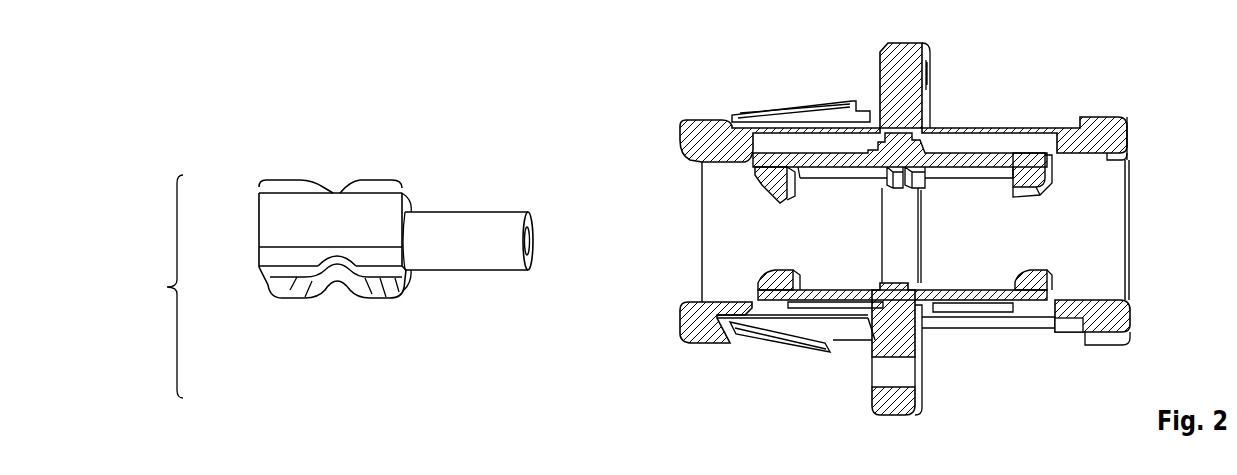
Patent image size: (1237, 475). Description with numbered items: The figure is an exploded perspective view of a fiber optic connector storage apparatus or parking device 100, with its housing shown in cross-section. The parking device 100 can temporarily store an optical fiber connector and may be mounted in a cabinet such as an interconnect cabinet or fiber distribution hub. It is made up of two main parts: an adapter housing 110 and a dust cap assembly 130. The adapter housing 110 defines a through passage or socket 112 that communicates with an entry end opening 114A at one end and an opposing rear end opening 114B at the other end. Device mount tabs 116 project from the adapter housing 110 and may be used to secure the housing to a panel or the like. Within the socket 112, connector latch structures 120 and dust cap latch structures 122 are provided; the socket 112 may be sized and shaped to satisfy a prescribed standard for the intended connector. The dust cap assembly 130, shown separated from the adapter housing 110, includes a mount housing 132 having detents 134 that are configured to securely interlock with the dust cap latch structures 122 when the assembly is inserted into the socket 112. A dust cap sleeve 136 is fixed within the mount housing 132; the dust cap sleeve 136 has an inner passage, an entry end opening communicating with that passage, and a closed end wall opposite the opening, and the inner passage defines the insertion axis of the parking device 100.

The parking device 100 is at (256, 40).
The adapter housing 110 is at (986, 334).
The socket 112 is at (1104, 217).
The entry end opening 114A is at (1135, 262).
The rear end opening 114B is at (686, 229).
The device mount tab 116 is at (895, 72).
The connector latch structure 120 is at (1020, 165).
The dust cap latch structure 122 is at (783, 168).
The dust cap assembly 130 is at (398, 172).
The mount housing 132 is at (271, 226).
The detent 134 is at (336, 193).
The dust cap sleeve 136 is at (498, 222).